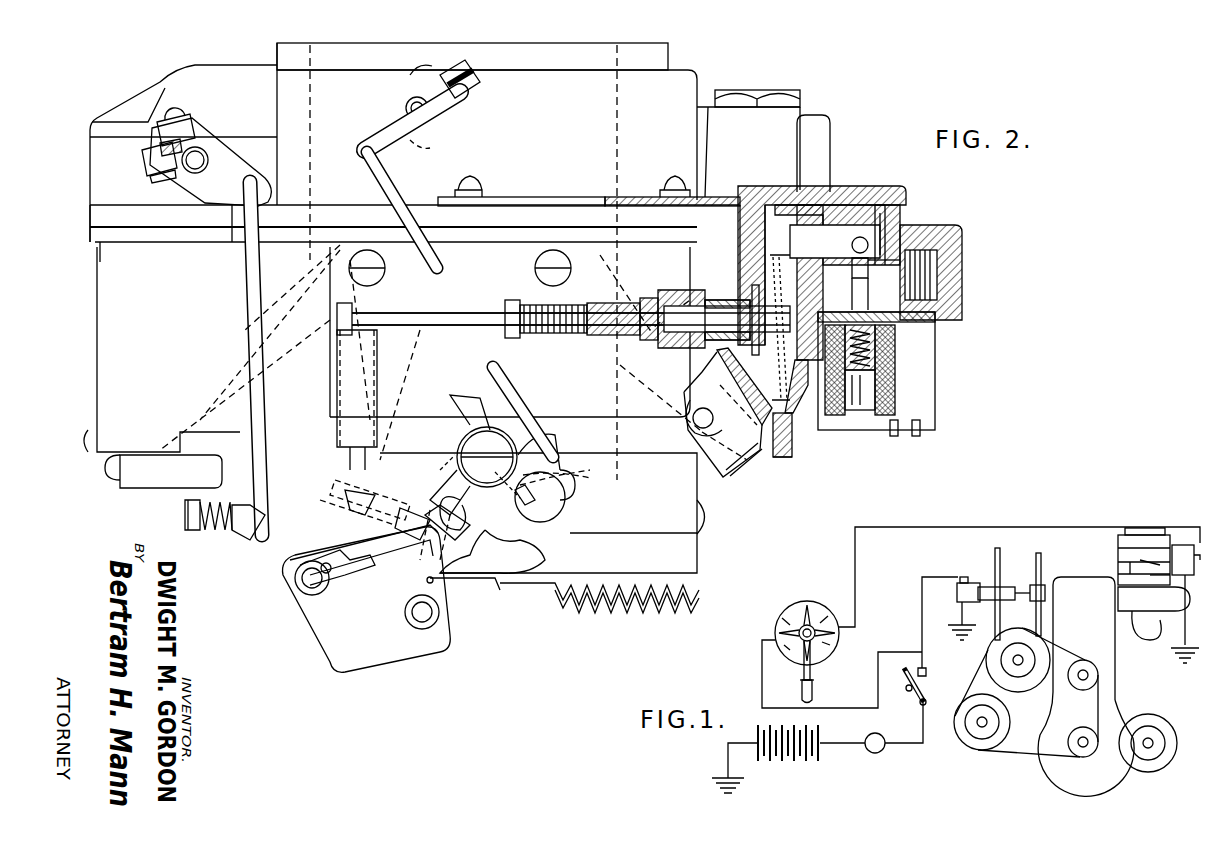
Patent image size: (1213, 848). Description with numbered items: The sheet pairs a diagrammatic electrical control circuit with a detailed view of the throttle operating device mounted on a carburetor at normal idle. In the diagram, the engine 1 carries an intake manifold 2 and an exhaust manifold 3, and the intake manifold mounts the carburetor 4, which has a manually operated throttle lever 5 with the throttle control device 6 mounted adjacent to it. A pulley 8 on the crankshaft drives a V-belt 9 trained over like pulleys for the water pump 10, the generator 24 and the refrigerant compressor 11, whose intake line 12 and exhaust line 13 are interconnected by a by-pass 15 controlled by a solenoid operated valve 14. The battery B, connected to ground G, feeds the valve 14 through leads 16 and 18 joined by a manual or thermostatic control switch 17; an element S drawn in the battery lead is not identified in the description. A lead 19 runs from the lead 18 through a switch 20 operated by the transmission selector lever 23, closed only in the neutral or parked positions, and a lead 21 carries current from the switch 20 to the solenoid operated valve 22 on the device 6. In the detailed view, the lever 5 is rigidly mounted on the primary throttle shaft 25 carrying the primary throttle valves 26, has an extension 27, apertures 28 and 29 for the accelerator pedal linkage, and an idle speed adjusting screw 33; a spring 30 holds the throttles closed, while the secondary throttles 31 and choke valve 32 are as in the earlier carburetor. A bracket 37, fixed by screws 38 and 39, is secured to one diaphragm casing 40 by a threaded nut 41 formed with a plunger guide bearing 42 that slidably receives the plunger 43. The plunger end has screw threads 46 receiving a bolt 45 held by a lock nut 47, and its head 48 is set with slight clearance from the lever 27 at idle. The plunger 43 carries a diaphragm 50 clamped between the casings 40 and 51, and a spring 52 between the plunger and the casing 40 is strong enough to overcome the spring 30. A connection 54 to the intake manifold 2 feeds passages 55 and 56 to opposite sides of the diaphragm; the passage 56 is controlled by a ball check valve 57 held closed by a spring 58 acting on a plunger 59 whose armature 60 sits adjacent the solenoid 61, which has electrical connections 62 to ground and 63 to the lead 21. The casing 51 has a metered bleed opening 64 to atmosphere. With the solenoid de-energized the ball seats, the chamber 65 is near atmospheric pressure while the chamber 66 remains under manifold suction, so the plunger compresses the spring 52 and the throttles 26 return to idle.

In FIG. 1, the engine 1 is at (1115, 685).
In FIG. 1, the intake manifold 2 is at (1188, 562).
In FIG. 1, the exhaust manifold 3 is at (1148, 636).
In FIG. 2, the carburetor 4 is at (712, 70).
In FIG. 1, the carburetor 4 is at (1118, 533).
In FIG. 2, the throttle lever 5 is at (380, 650).
In FIG. 1, the throttle lever 5 is at (1172, 580).
In FIG. 2, the throttle control device 6 is at (904, 184).
In FIG. 1, the throttle control device 6 is at (1180, 545).
In FIG. 1, the pulley 8 is at (1080, 755).
In FIG. 1, the V-belt 9 is at (1022, 752).
In FIG. 1, the water pump 10 is at (1085, 672).
In FIG. 1, the accessory device 11 is at (986, 664).
In FIG. 1, the intake line 12 is at (995, 552).
In FIG. 1, the exhaust line 13 is at (1041, 565).
In FIG. 1, the solenoid operated valve 14 is at (957, 595).
In FIG. 1, the by-pass 15 is at (1022, 597).
In FIG. 1, the lead 16 is at (902, 743).
In FIG. 1, the control switch 17 is at (912, 696).
In FIG. 1, the lead 18 is at (928, 645).
In FIG. 1, the lead 19 is at (897, 652).
In FIG. 1, the switch 20 is at (785, 625).
In FIG. 1, the lead 21 is at (995, 515).
In FIG. 2, the solenoid operated valve 22 is at (946, 342).
In FIG. 1, the transmission selector lever 23 is at (810, 690).
In FIG. 1, the generator 24 is at (972, 742).
In FIG. 2, the primary throttle shaft 25 is at (330, 500).
In FIG. 2, the primary throttle valves 26 is at (310, 460).
In FIG. 2, the extension 27 is at (385, 395).
In FIG. 2, the aperture 28 is at (432, 612).
In FIG. 2, the aperture 29 is at (305, 580).
In FIG. 2, the spring 30 is at (600, 612).
In FIG. 2, the secondary throttles 31 is at (546, 499).
In FIG. 2, the choke valve 32 is at (440, 148).
In FIG. 2, the idle speed adjusting screw 33 is at (438, 530).
In FIG. 2, the bracket 37 is at (645, 197).
In FIG. 2, the screw 38 is at (478, 182).
In FIG. 2, the screw 39 is at (685, 175).
In FIG. 2, the diaphragm casing 40 is at (738, 205).
In FIG. 2, the threaded nut 41 is at (690, 350).
In FIG. 2, the plunger guide bearing 42 is at (648, 341).
In FIG. 2, the plunger 43 is at (600, 336).
In FIG. 2, the bolt 45 is at (448, 327).
In FIG. 2, the screw threads 46 is at (545, 334).
In FIG. 2, the lock nut 47 is at (510, 338).
In FIG. 2, the head 48 is at (345, 335).
In FIG. 2, the diaphragm 50 is at (793, 425).
In FIG. 2, the diaphragm casing 51 is at (790, 458).
In FIG. 2, the spring 52 is at (735, 296).
In FIG. 2, the connection 54 is at (942, 272).
In FIG. 2, the passage 55 is at (890, 222).
In FIG. 2, the passage 56 is at (890, 264).
In FIG. 2, the ball check valve 57 is at (862, 237).
In FIG. 2, the spring 58 is at (875, 355).
In FIG. 2, the plunger 59 is at (900, 298).
In FIG. 2, the armature 60 is at (875, 325).
In FIG. 2, the solenoid 61 is at (897, 380).
In FIG. 2, the electrical connection 62 is at (894, 436).
In FIG. 2, the electrical connection 63 is at (916, 436).
In FIG. 2, the metered bleed opening 64 is at (800, 395).
In FIG. 2, the chamber 65 is at (780, 260).
In FIG. 2, the chamber 66 is at (758, 408).
In FIG. 1, the battery B is at (795, 762).
In FIG. 1, the ground G is at (1182, 664).
In FIG. 1, the switch S is at (875, 743).